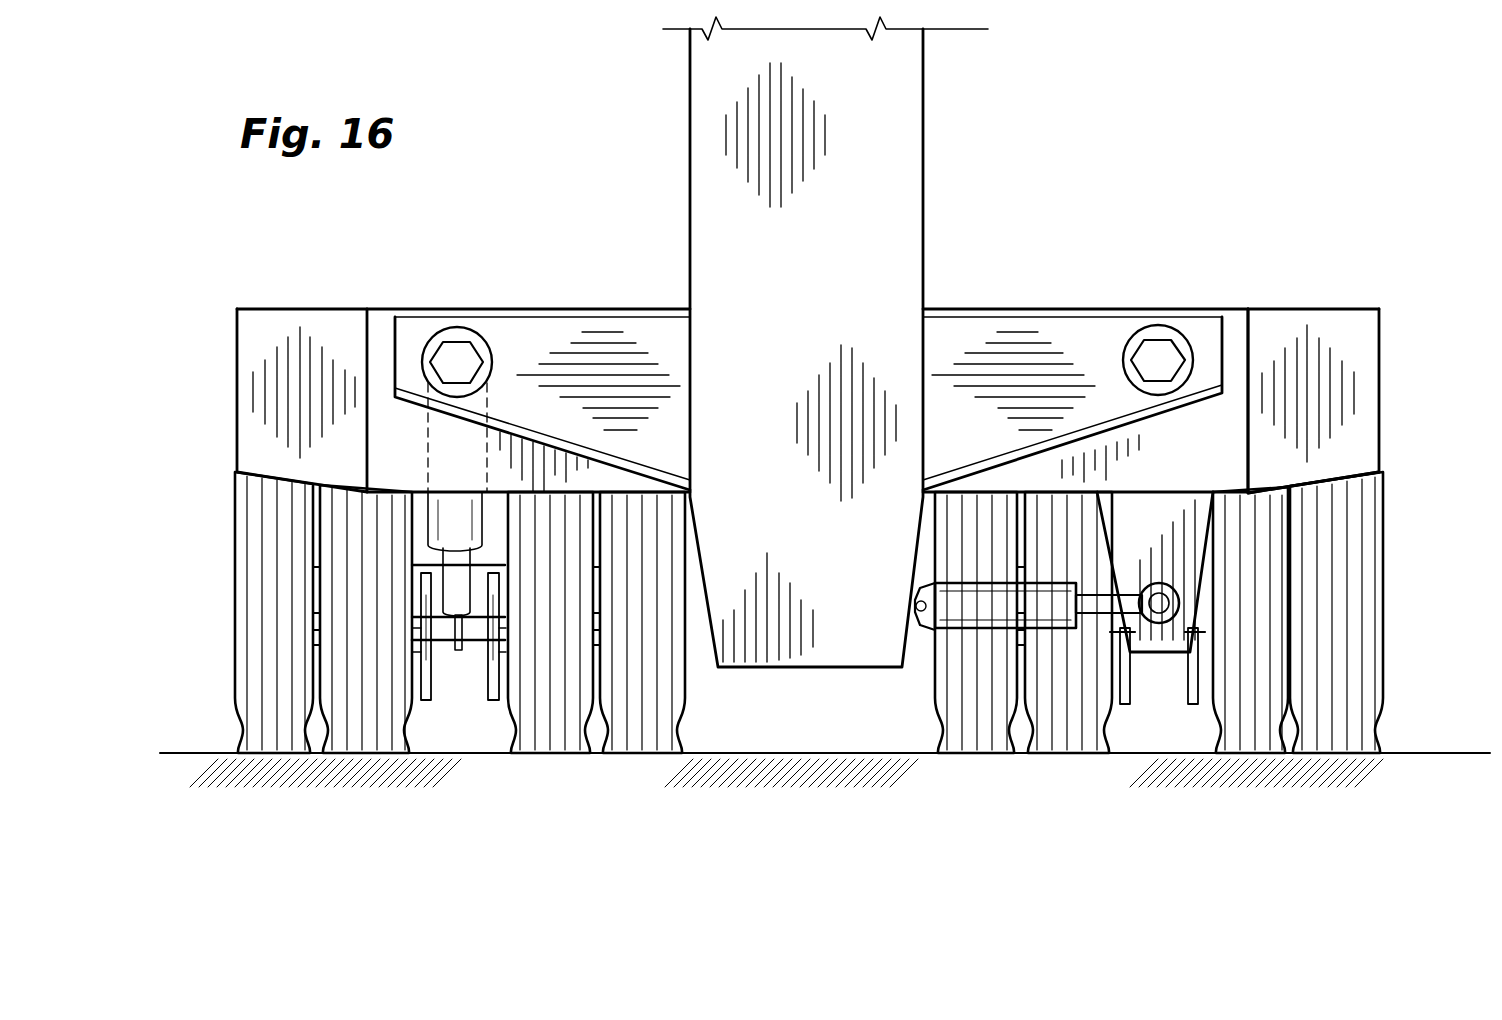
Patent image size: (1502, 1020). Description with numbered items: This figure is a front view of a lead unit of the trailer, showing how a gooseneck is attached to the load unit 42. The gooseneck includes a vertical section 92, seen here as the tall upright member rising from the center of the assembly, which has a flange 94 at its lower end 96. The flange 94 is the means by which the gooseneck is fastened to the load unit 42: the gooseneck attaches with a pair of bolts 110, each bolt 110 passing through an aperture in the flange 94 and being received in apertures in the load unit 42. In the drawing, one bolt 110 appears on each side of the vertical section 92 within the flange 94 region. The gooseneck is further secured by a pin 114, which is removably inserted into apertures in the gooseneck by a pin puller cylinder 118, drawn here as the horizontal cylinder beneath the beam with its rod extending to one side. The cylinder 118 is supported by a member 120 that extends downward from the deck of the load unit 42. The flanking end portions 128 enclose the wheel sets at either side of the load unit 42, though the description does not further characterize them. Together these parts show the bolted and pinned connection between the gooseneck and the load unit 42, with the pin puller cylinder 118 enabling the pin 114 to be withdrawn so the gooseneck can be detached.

The vertical section 92 is at (927, 115).
The lower end 96 is at (865, 312).
The flange 94 is at (507, 316).
The bolt 110 is at (455, 358).
The load unit 42 is at (1333, 345).
The side plate 128 is at (237, 350).
The member 120 is at (1155, 525).
The pin puller cylinder 118 is at (970, 598).
The pin 114 is at (917, 640).